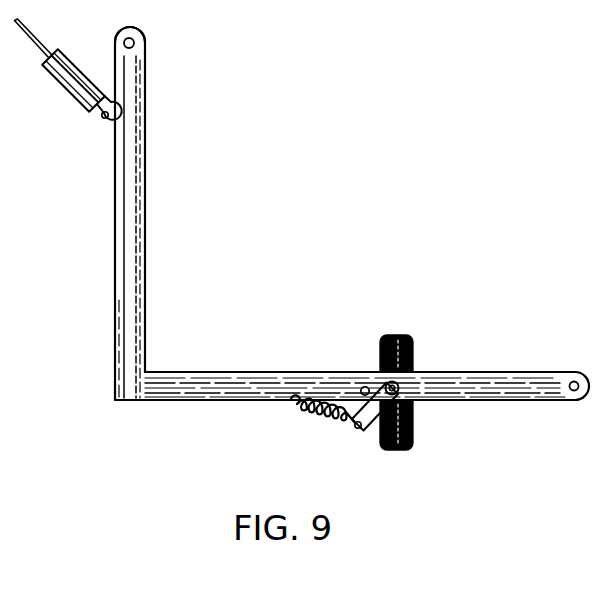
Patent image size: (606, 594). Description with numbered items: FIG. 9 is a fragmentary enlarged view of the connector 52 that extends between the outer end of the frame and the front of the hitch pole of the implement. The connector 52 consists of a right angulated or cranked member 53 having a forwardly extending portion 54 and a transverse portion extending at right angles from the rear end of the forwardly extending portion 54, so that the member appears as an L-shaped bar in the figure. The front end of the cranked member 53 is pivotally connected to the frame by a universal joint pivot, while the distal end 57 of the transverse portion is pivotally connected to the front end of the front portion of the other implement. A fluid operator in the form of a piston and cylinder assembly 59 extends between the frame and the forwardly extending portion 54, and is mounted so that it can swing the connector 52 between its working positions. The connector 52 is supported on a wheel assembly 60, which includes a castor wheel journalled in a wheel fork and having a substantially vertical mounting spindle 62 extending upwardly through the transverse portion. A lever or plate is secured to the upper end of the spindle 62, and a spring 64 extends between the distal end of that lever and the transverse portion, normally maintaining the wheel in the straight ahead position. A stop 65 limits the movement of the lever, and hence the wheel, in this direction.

The connector 52 is at (114, 204).
The right angulated or cranked member 53 is at (120, 312).
The forwardly extending portion 54 is at (137, 73).
The distal end 57 is at (552, 363).
The piston and cylinder assembly 59 is at (66, 88).
The wheel assembly 60 is at (414, 358).
The mounting spindle 62 is at (404, 396).
The spring 64 is at (332, 428).
The stop 65 is at (363, 387).